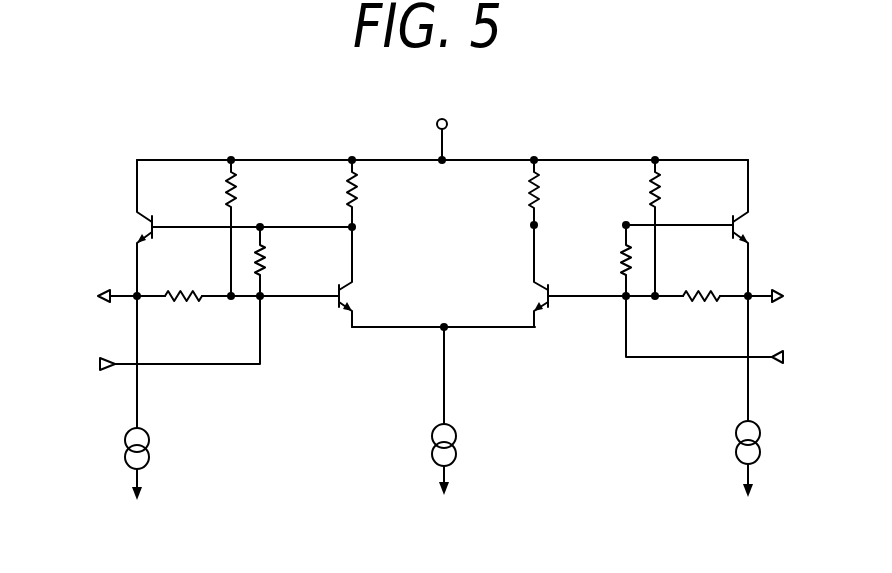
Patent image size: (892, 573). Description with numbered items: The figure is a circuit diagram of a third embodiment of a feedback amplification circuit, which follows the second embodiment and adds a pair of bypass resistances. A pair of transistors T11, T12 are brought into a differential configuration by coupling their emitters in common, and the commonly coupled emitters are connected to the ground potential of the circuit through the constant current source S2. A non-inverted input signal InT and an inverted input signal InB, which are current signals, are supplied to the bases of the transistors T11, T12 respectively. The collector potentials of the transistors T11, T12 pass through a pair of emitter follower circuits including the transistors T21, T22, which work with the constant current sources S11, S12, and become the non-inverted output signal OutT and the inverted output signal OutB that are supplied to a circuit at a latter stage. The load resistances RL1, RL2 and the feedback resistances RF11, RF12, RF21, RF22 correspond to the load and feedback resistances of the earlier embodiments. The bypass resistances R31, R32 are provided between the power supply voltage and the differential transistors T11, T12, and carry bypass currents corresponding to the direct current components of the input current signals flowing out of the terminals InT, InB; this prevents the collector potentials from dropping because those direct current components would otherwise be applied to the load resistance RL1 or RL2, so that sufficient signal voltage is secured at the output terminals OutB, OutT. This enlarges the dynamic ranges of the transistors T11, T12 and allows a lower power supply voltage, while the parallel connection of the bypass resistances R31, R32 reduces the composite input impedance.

The transistor T11 is at (369, 277).
The transistor T12 is at (515, 276).
The transistor T21 is at (119, 228).
The transistor T22 is at (767, 228).
The load resistance RL1 is at (322, 193).
The load resistance RL2 is at (561, 192).
The bypass resistance R31 is at (203, 228).
The bypass resistance R32 is at (682, 228).
The feedback resistance RF11 is at (291, 261).
The feedback resistance RF12 is at (591, 260).
The feedback resistance RF21 is at (187, 318).
The feedback resistance RF22 is at (702, 315).
The constant current source S11 is at (159, 398).
The constant current source S12 is at (772, 396).
The constant current source S2 is at (461, 411).
The inverted output signal OutB is at (80, 296).
The non-inverted output signal OutT is at (804, 291).
The non-inverted input signal InT is at (152, 341).
The inverted input signal InB is at (734, 336).